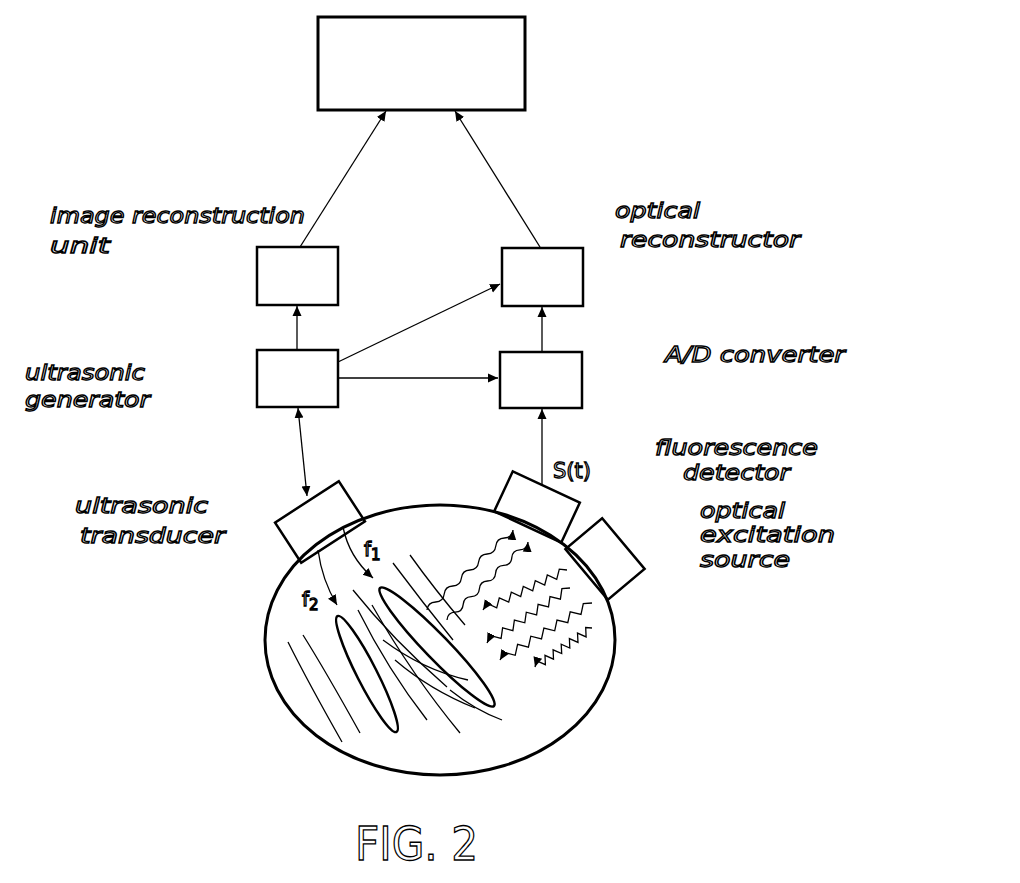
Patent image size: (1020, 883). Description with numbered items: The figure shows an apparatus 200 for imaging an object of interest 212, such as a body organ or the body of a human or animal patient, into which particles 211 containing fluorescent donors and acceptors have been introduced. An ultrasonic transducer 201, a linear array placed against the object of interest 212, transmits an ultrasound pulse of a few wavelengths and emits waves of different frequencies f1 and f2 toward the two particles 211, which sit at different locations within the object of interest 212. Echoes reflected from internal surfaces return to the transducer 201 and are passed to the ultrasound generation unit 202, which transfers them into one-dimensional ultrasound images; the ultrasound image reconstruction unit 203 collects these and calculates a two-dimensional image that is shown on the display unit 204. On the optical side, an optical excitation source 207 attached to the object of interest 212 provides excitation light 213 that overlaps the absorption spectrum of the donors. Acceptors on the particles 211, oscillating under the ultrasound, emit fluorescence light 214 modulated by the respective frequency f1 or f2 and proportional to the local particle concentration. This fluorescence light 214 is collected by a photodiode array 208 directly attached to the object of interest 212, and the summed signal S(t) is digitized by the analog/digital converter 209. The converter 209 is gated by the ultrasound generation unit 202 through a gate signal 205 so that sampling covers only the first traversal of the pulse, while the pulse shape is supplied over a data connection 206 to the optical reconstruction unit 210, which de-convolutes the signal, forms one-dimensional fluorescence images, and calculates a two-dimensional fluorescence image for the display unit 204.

The apparatus 200 is at (613, 60).
The ultrasonic transducer 201 is at (293, 522).
The ultrasound generation unit 202 is at (257, 377).
The ultrasound image reconstruction unit 203 is at (257, 269).
The display unit 204 is at (318, 62).
The gate signal 205 is at (427, 382).
The data connection 206 is at (428, 312).
The optical excitation source 207 is at (614, 559).
The photodiode array 208 is at (572, 500).
The analog/digital converter 209 is at (582, 378).
The optical reconstruction unit 210 is at (583, 275).
The particles 211 is at (398, 734).
The object of interest 212 is at (294, 637).
The excitation light 213 is at (560, 648).
The fluorescence light 214 is at (468, 572).